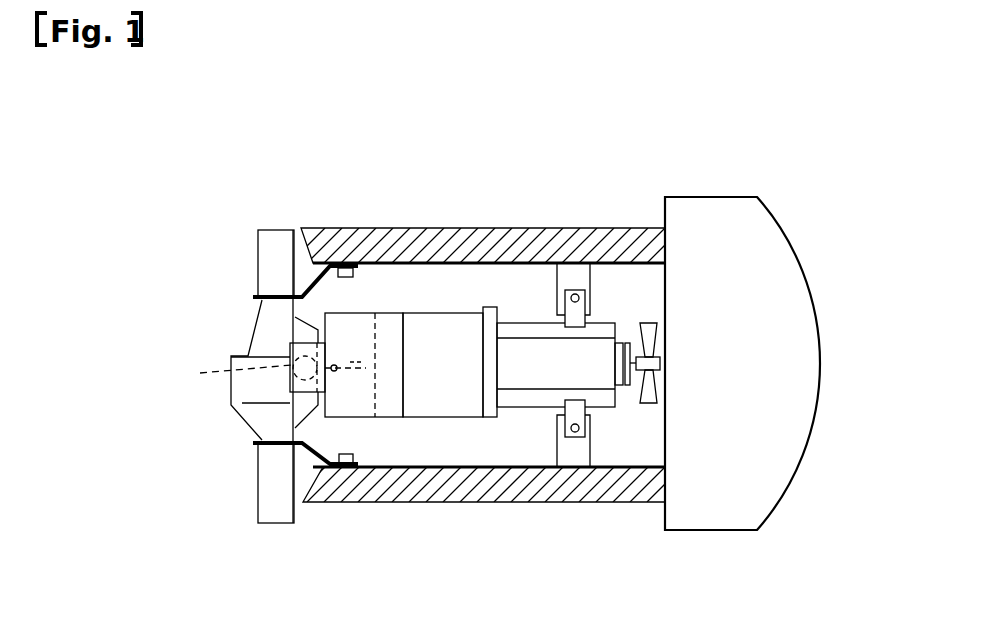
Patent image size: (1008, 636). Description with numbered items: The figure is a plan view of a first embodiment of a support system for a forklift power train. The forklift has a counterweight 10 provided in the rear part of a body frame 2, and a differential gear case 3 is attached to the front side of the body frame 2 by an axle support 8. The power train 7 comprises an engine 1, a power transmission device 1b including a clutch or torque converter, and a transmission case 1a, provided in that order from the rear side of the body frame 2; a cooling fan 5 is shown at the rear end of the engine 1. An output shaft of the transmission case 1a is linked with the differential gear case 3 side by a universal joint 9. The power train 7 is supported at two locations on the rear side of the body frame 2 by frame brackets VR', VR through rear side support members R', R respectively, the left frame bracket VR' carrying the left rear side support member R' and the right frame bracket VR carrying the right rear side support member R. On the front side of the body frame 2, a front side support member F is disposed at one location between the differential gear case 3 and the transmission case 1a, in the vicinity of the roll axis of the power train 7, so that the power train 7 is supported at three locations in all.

The engine 1 is at (528, 355).
The transmission case 1a is at (392, 327).
The power transmission device 1b is at (447, 325).
The body frame 2 is at (603, 245).
The differential gear case 3 is at (318, 408).
The cooling fan 5 is at (657, 335).
The power train 7 is at (514, 412).
The axle support 8 is at (331, 262).
The universal joint 9 is at (350, 362).
The counterweight 10 is at (763, 250).
The front side support member F is at (272, 375).
The frame bracket (right) VR is at (571, 238).
The frame bracket (left) VR' is at (580, 494).
The rear side support member (right) R is at (644, 297).
The rear side support member (left) R' is at (646, 425).